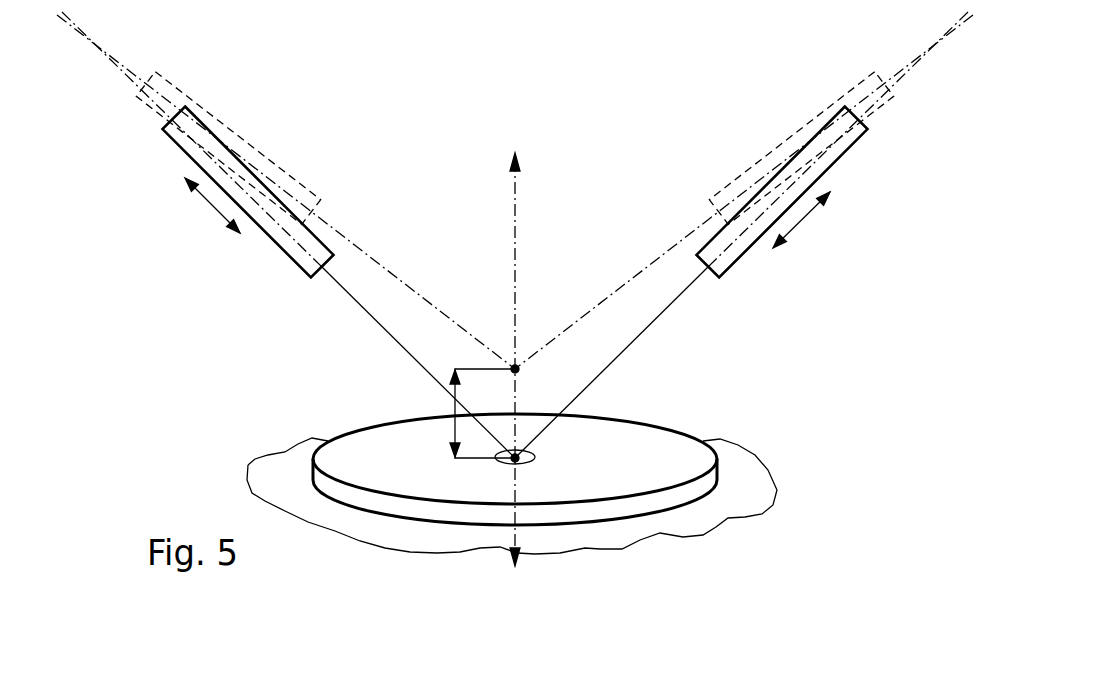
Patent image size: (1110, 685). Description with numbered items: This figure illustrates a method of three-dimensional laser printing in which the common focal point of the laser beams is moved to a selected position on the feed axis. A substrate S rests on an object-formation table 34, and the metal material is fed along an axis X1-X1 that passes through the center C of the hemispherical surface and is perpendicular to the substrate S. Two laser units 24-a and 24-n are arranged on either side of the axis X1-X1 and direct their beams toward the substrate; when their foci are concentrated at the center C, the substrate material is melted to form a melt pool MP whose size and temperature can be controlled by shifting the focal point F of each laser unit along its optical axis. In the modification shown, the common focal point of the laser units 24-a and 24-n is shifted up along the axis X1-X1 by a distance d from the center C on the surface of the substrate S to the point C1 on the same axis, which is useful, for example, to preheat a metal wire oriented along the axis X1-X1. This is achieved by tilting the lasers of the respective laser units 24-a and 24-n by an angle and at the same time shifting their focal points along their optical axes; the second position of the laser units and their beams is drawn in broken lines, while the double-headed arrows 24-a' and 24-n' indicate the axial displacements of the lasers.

The laser unit 24-a is at (286, 235).
The double-headed arrow 24-a' is at (190, 222).
The laser unit 24-n is at (744, 235).
The double-headed arrow 24-n' is at (832, 239).
The axis X1 is at (522, 375).
The point C1 is at (514, 368).
The focal point F is at (516, 456).
The distance d is at (457, 428).
The substrate S is at (347, 441).
The center C is at (495, 456).
The melt pool MP is at (533, 454).
The object-formation table 34 is at (265, 470).